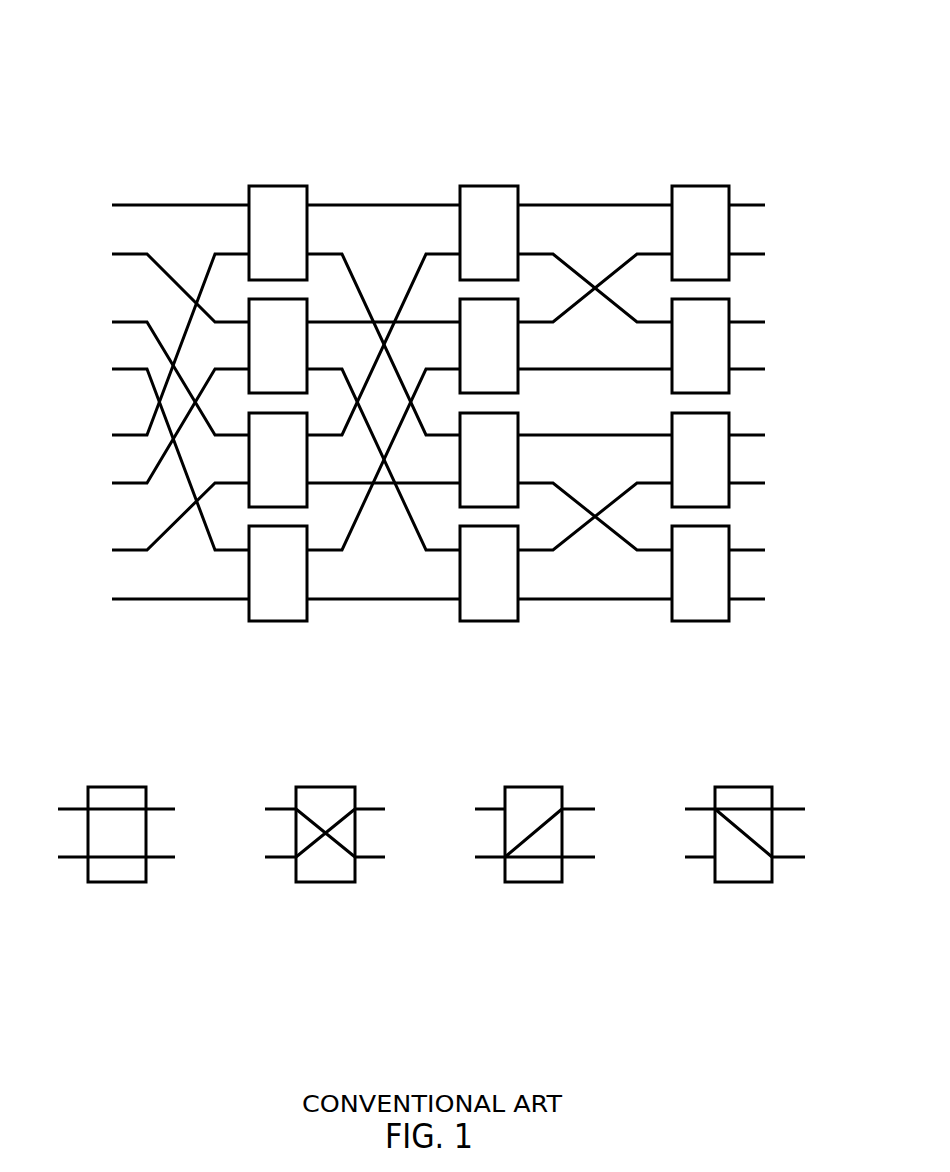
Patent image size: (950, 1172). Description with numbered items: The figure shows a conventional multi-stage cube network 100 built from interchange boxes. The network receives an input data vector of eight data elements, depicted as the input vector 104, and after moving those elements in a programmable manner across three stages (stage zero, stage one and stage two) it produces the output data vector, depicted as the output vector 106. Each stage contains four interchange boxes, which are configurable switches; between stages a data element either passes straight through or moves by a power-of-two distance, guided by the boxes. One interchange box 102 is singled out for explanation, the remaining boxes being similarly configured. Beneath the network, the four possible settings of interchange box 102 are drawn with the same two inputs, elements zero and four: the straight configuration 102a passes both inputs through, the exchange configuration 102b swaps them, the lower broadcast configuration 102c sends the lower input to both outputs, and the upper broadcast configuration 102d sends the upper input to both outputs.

The multi-stage cube network 100 is at (105, 60).
The interchange box 102 is at (258, 161).
The input[7:0] 104 is at (60, 466).
The output[7:0] 106 is at (818, 483).
The straight configuration 102a is at (104, 751).
The exchange configuration 102b is at (314, 751).
The lower broadcast configuration 102c is at (524, 751).
The upper broadcast configuration 102d is at (734, 751).